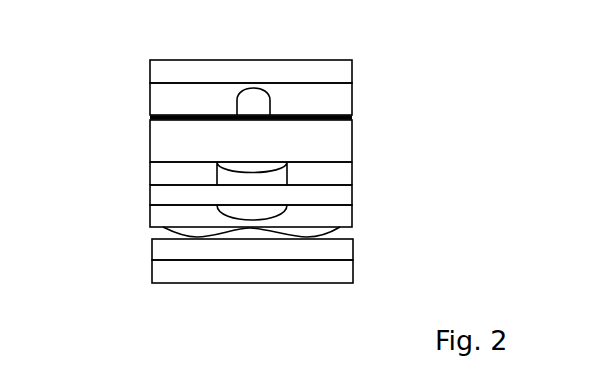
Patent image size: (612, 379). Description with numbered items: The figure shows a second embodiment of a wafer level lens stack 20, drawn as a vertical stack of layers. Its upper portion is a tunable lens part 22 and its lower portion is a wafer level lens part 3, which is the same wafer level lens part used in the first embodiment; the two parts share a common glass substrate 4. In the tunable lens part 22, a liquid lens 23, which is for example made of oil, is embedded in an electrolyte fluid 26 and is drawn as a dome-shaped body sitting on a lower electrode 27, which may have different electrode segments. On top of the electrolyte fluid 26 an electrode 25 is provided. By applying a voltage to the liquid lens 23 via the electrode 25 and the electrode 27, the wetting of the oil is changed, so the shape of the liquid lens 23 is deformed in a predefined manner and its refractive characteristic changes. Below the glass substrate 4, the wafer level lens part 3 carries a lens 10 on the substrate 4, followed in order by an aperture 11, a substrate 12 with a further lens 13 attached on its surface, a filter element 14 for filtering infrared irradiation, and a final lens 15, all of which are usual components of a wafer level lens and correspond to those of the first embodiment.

The wafer level lens stack 20 is at (430, 79).
The tunable lens part 22 is at (440, 111).
The wafer level lens part 3 is at (442, 186).
The electrode 25 is at (150, 75).
The electrolyte fluid 26 is at (150, 100).
The electrode 27 is at (150, 117).
The liquid lens 23 is at (270, 102).
The glass substrate 4 is at (150, 139).
The lens 10 is at (150, 162).
The aperture 11 is at (150, 173).
The substrate 12 is at (150, 197).
The further lens 13 is at (150, 213).
The filter element 14 is at (152, 249).
The final lens 15 is at (152, 273).